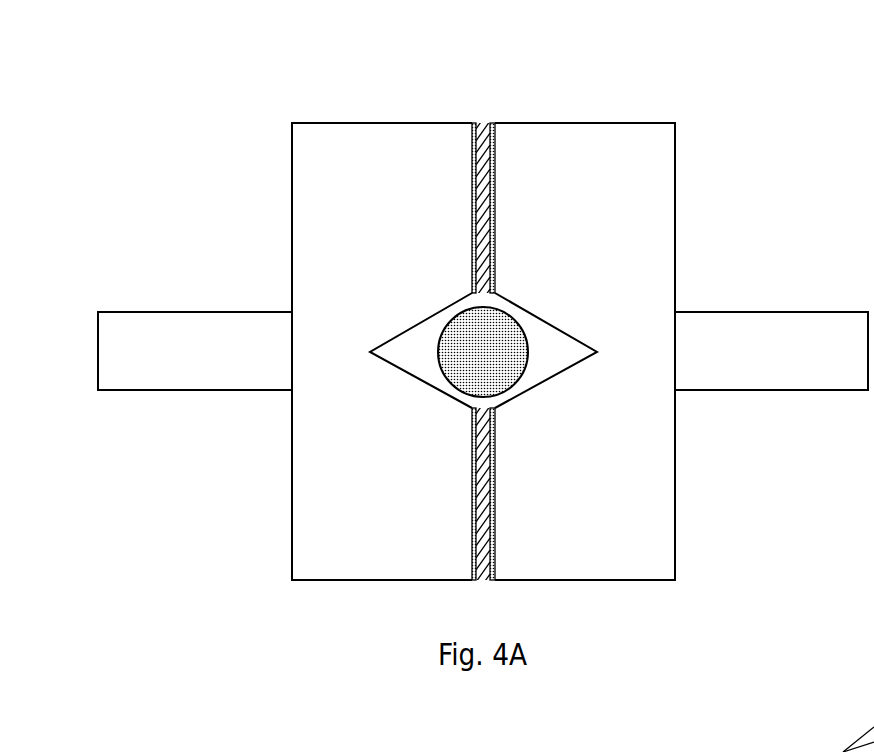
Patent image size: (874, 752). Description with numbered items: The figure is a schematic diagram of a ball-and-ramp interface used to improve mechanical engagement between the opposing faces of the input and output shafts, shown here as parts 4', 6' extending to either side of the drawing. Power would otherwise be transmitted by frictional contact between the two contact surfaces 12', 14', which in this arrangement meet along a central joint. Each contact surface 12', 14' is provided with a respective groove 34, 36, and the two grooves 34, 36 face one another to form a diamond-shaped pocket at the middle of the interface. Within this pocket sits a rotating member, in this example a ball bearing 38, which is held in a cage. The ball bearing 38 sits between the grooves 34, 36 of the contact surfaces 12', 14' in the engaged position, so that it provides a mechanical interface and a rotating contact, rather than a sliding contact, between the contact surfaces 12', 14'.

The first lead / terminal 4' is at (195, 291).
The second lead / terminal 6' is at (771, 297).
The contact surface 12' is at (382, 294).
The contact surface 14' is at (585, 294).
The groove 34 is at (415, 350).
The groove 36 is at (555, 352).
The ball bearing 38 is at (475, 352).